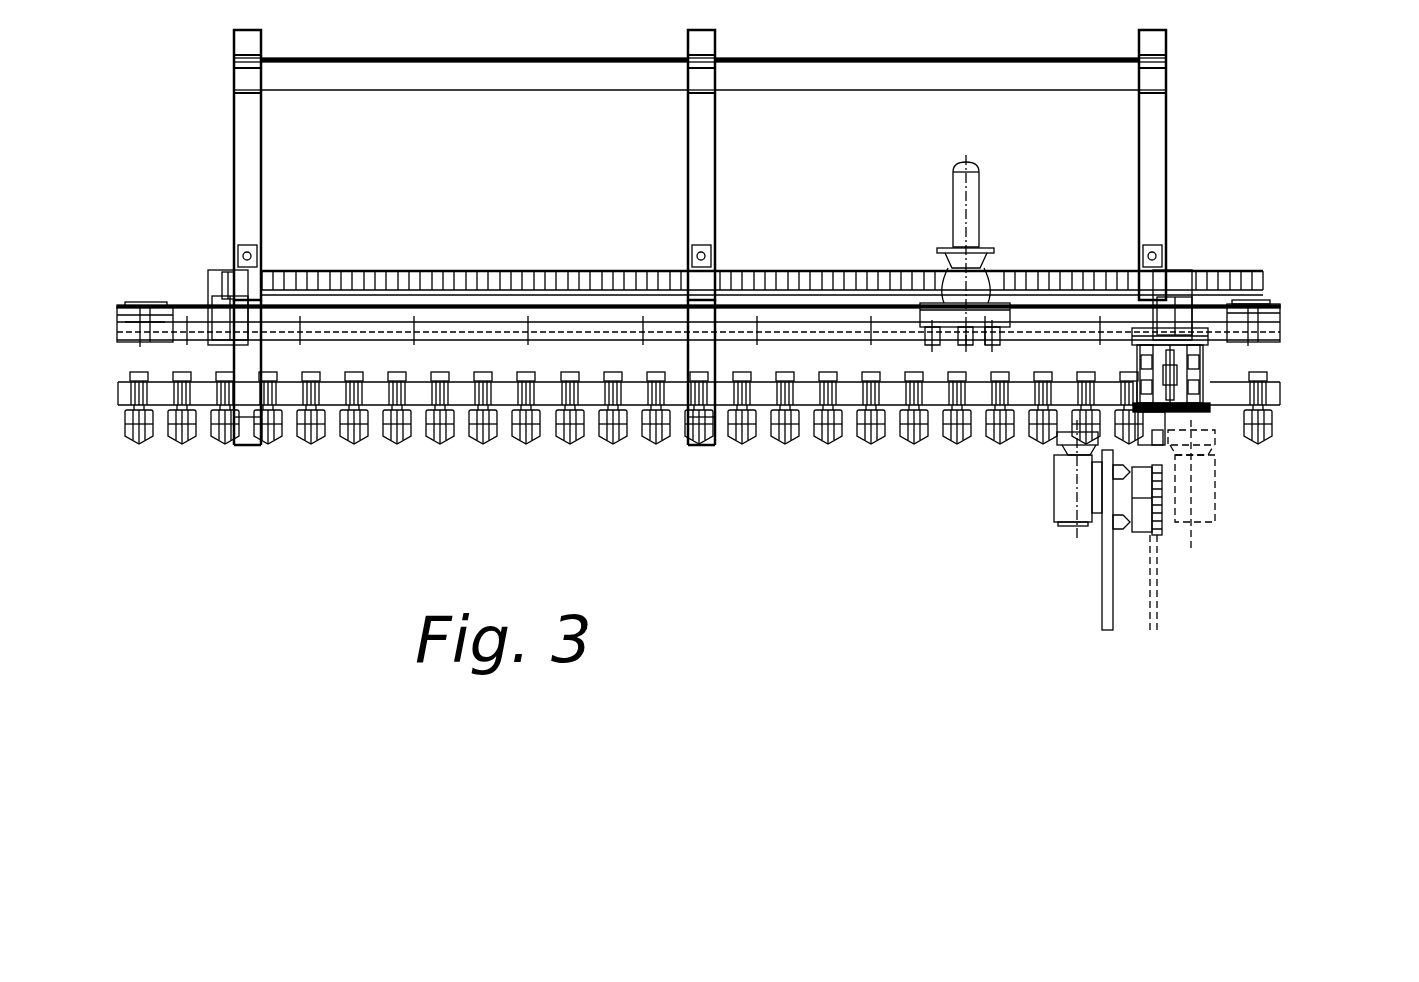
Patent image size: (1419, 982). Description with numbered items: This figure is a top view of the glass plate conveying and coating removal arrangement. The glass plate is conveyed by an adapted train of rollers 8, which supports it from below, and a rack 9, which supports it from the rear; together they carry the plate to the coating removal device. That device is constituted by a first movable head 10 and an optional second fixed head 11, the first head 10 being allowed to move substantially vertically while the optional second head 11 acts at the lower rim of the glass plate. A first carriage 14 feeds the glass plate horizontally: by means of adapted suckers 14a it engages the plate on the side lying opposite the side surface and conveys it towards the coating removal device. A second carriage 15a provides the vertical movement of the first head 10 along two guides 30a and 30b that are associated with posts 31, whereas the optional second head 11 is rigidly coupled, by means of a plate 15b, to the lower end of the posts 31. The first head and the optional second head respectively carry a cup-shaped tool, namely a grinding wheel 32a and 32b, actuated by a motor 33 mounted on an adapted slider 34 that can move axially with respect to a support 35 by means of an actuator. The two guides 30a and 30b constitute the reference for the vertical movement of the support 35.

The train of rollers 8 is at (168, 468).
The rack 9 is at (205, 182).
The first movable head 10 is at (1096, 583).
The second fixed head 11 is at (1222, 547).
The first carriage 14 is at (1275, 436).
The suckers 14a is at (1203, 418).
The second carriage 15a is at (1098, 535).
The plate 15b is at (1168, 548).
The guide 30a is at (1120, 535).
The guide 30b is at (1057, 470).
The posts 31 is at (1147, 517).
The grinding wheel 32a is at (1040, 448).
The grinding wheel 32b is at (1222, 444).
The motor 33 is at (1055, 497).
The slider 34 is at (1093, 550).
The support 35 is at (1108, 632).